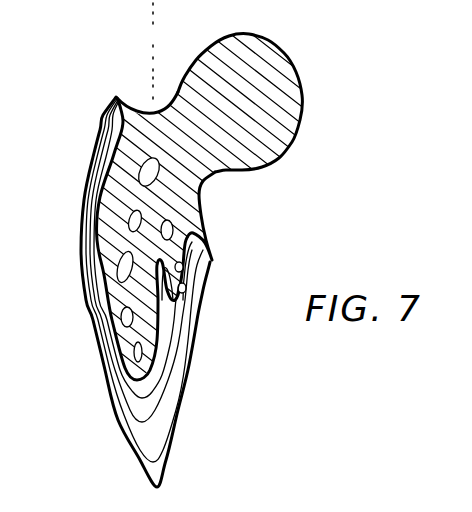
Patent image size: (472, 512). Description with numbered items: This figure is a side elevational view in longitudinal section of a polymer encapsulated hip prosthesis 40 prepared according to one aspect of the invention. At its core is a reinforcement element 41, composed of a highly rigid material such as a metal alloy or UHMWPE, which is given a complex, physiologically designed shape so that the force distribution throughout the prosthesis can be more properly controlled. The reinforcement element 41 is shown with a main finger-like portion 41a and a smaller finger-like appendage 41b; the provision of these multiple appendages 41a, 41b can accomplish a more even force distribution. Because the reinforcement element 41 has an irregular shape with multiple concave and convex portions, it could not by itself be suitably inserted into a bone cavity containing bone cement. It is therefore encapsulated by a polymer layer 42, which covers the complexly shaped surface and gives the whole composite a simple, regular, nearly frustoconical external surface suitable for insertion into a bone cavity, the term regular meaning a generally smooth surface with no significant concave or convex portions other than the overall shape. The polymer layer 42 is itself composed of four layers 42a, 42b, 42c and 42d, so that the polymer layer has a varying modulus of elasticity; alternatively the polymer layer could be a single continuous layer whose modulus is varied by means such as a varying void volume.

The polymer encapsulated hip prosthesis 40 is at (302, 122).
The reinforcement element 41 is at (140, 166).
The main finger-like portion 41a is at (110, 289).
The smaller finger-like appendage 41b is at (172, 278).
The polymer layer 42 is at (156, 292).
The first polymer layer 42a is at (150, 378).
The second polymer layer 42b is at (157, 398).
The third polymer layer 42c is at (152, 435).
The fourth polymer layer 42d is at (157, 472).